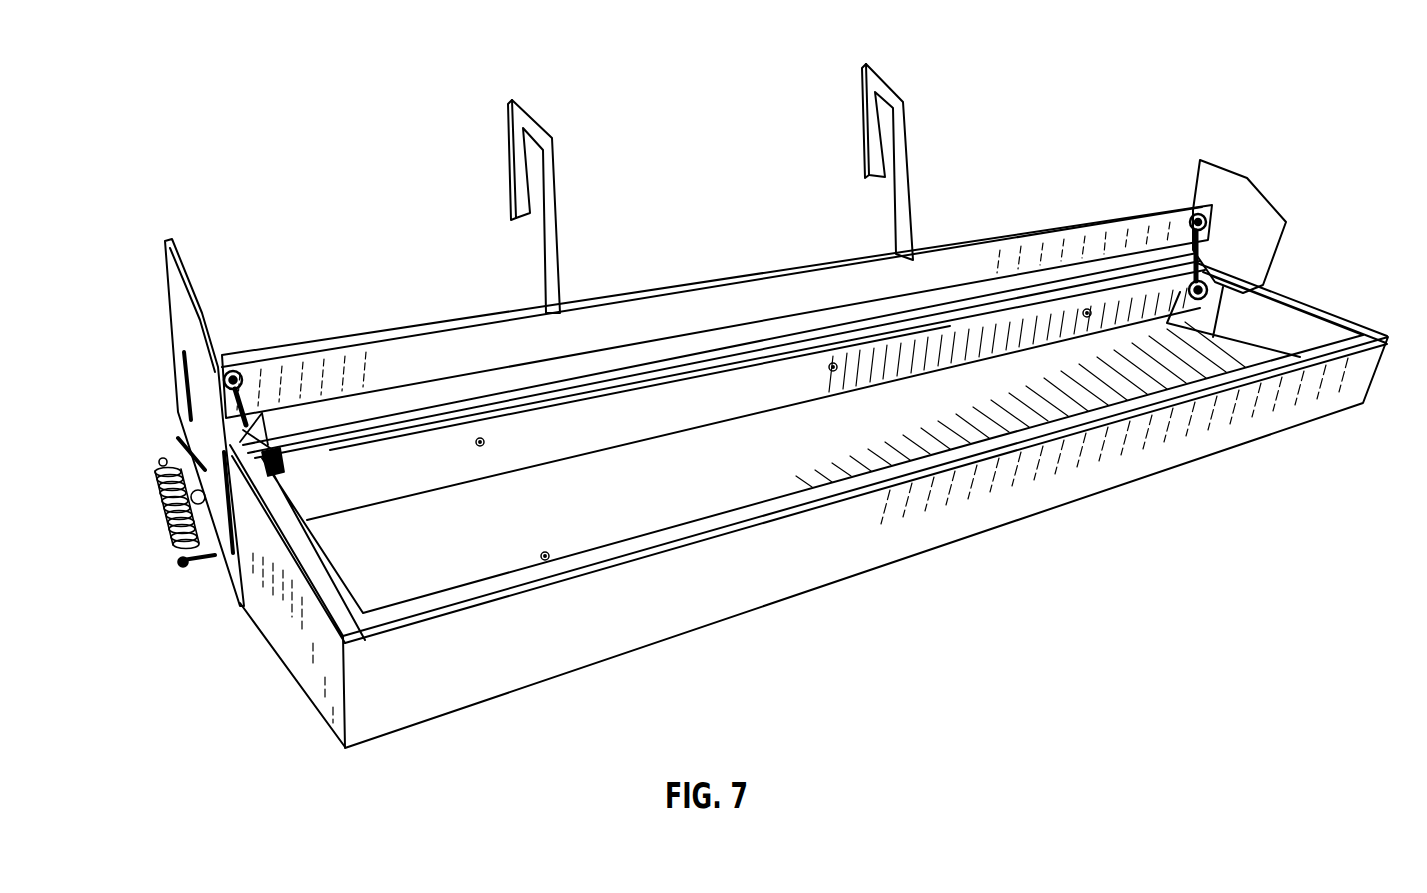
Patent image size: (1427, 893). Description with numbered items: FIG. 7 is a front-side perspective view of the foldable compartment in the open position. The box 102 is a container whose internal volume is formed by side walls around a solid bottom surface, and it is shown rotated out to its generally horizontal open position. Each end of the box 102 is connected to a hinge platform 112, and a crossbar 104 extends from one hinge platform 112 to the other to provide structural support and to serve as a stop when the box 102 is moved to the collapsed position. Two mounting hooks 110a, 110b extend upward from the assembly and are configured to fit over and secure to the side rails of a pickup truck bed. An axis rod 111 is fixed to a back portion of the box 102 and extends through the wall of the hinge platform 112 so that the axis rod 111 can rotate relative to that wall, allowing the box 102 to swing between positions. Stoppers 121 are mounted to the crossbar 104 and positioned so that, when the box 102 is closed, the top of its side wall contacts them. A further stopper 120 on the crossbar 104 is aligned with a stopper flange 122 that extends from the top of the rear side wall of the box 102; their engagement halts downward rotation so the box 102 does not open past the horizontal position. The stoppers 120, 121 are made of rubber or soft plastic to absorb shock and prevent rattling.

The box 102 is at (686, 450).
The crossbar 104 is at (668, 290).
The mounting hook 110a is at (527, 113).
The mounting hook 110b is at (880, 73).
The axis rod 111 is at (1204, 282).
The hinge platform 112 is at (133, 588).
The stopper 120 is at (188, 412).
The stopper 121 is at (237, 370).
The stopper flange 122 is at (257, 420).